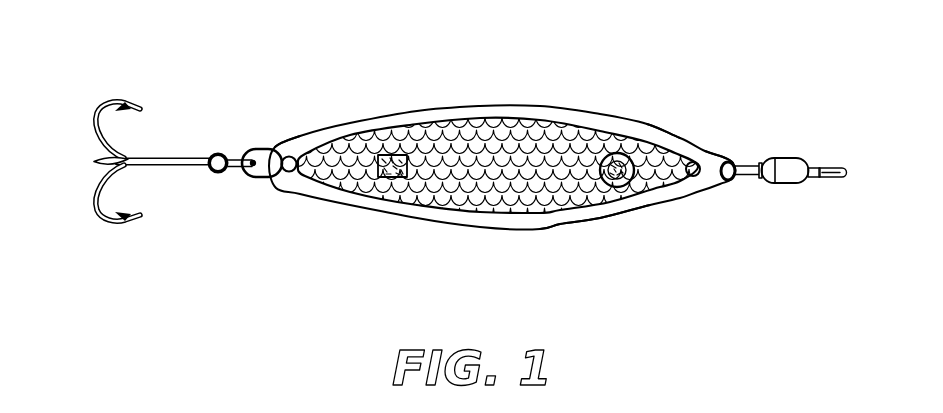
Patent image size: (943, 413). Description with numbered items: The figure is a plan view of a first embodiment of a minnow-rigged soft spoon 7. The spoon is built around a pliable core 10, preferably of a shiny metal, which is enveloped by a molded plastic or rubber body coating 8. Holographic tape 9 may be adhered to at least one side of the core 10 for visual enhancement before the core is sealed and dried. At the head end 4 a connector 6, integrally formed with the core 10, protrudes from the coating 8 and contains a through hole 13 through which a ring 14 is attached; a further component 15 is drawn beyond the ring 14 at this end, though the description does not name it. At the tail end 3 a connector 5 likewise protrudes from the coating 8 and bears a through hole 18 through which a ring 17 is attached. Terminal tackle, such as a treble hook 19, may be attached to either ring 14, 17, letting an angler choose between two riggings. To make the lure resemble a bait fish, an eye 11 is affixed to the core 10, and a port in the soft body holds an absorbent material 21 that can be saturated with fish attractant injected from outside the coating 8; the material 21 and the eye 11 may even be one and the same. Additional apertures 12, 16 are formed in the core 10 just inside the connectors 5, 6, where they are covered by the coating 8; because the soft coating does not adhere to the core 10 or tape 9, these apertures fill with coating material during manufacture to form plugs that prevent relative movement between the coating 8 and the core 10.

The tail end 3 is at (367, 108).
The head end 4 is at (636, 229).
The connector 5 is at (267, 136).
The connector 6 is at (722, 152).
The minnow-rigged spoon 7 is at (623, 83).
The body coating 8 is at (663, 127).
The holographic tape 9 is at (505, 130).
The pliable core 10 is at (580, 212).
The eye 11 is at (627, 180).
The aperture 12 is at (703, 174).
The through hole 13 is at (737, 160).
The ring 14 is at (741, 175).
The swivel 15 is at (800, 160).
The aperture 16 is at (289, 172).
The ring 17 is at (238, 173).
The through hole 18 is at (252, 150).
The treble hook 19 is at (100, 110).
The absorbent material 21 is at (383, 177).